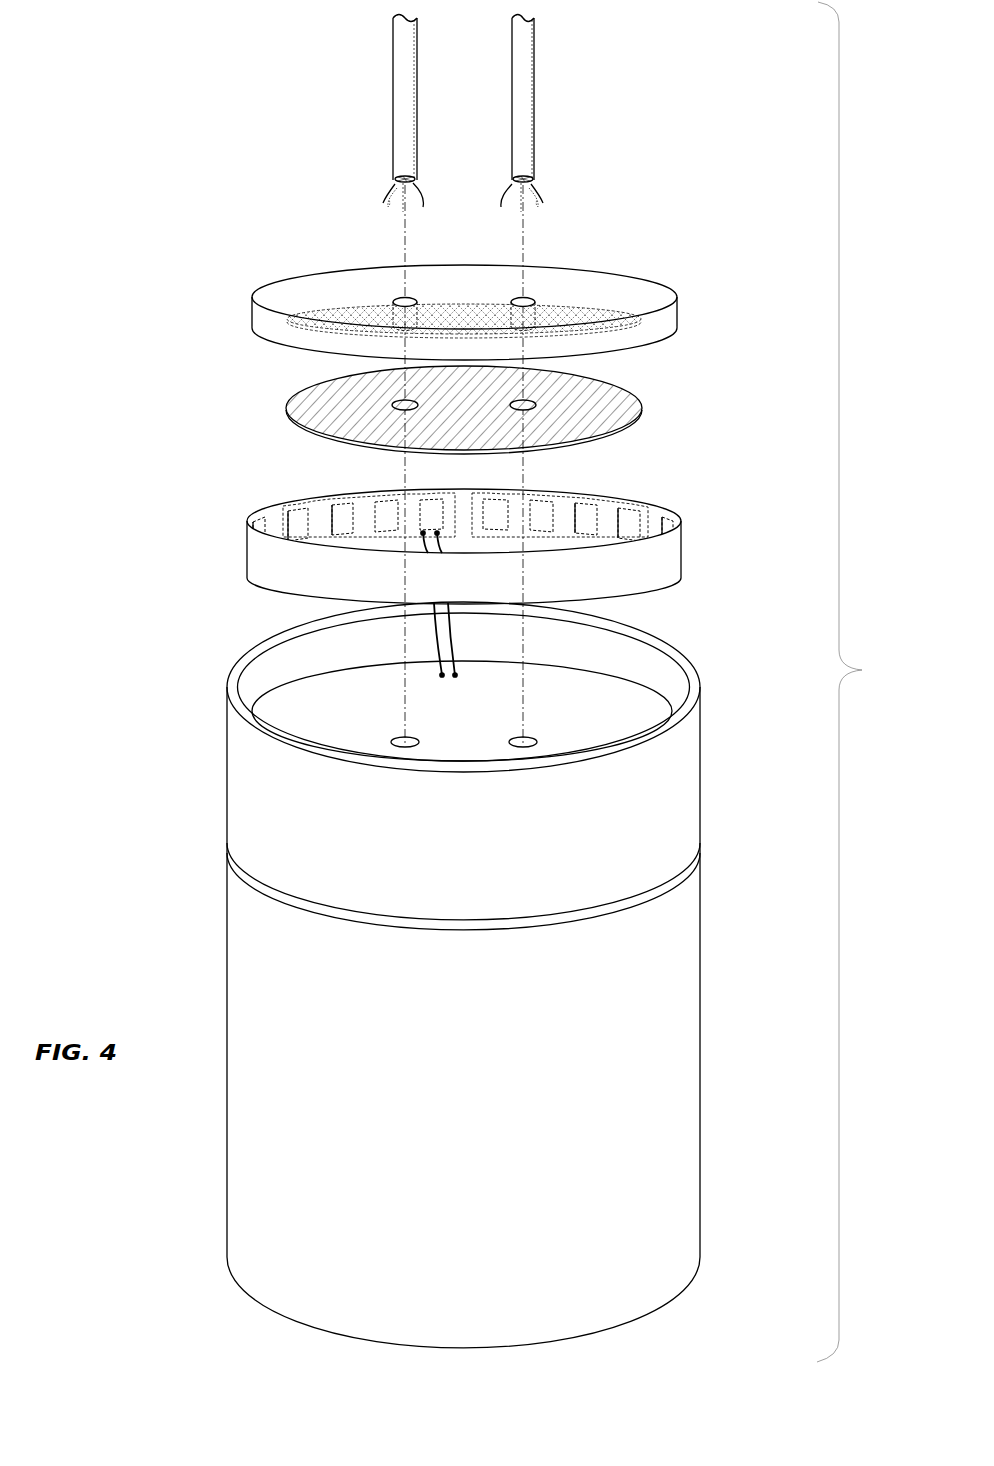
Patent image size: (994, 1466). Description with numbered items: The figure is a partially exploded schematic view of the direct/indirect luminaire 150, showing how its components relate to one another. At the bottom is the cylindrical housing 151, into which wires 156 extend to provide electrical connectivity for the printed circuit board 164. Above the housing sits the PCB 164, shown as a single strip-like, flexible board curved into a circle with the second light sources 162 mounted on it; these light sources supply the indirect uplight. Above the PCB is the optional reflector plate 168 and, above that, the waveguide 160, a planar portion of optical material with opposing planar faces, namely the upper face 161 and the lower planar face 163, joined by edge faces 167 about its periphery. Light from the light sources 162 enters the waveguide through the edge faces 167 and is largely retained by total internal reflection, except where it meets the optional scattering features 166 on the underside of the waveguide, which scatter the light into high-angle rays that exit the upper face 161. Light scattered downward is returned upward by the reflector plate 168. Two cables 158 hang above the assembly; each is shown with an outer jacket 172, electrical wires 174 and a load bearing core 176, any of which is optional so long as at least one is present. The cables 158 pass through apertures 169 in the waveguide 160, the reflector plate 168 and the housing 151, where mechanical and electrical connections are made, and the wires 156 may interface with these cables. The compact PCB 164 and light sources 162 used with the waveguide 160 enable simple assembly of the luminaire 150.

The luminaire 150 is at (864, 682).
The housing 151 is at (240, 673).
The wires 156 is at (452, 653).
The cables 158 is at (393, 104).
The waveguide 160 is at (263, 298).
The upper face 161 is at (315, 283).
The second light sources 162 is at (540, 503).
The lower planar face 163 is at (313, 355).
The printed circuit board 164 is at (267, 552).
The scattering features 166 is at (577, 334).
The edge faces 167 is at (257, 315).
The reflector plate 168 is at (632, 423).
The apertures 169 is at (398, 296).
The outer jackets 172 is at (523, 127).
The electrical wires 174 is at (533, 185).
The load bearing core 176 is at (522, 208).